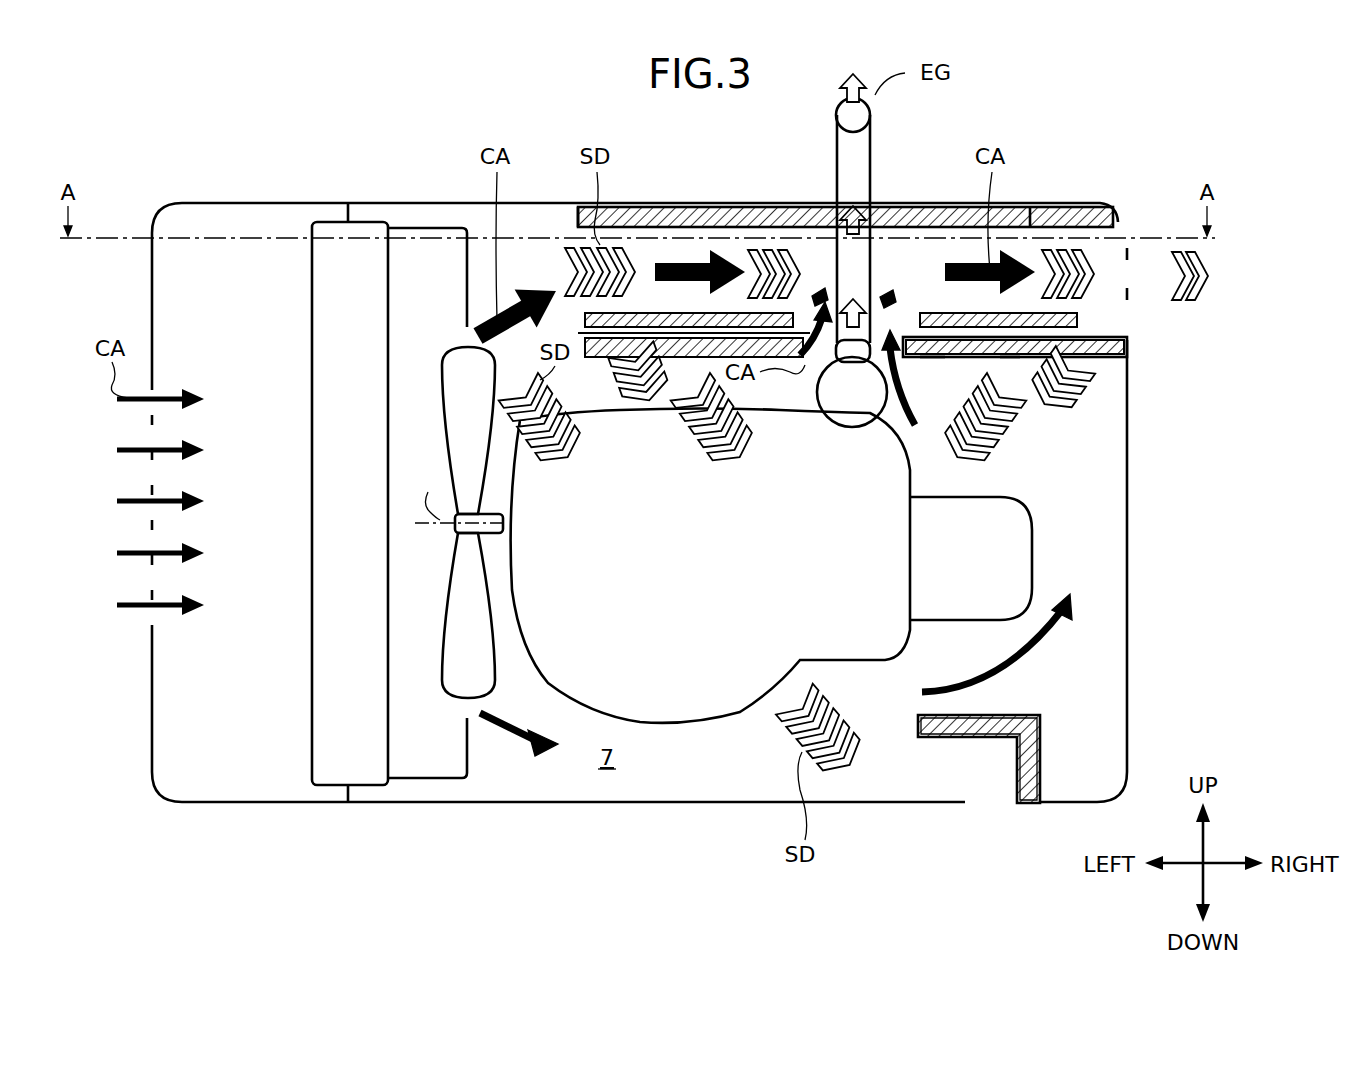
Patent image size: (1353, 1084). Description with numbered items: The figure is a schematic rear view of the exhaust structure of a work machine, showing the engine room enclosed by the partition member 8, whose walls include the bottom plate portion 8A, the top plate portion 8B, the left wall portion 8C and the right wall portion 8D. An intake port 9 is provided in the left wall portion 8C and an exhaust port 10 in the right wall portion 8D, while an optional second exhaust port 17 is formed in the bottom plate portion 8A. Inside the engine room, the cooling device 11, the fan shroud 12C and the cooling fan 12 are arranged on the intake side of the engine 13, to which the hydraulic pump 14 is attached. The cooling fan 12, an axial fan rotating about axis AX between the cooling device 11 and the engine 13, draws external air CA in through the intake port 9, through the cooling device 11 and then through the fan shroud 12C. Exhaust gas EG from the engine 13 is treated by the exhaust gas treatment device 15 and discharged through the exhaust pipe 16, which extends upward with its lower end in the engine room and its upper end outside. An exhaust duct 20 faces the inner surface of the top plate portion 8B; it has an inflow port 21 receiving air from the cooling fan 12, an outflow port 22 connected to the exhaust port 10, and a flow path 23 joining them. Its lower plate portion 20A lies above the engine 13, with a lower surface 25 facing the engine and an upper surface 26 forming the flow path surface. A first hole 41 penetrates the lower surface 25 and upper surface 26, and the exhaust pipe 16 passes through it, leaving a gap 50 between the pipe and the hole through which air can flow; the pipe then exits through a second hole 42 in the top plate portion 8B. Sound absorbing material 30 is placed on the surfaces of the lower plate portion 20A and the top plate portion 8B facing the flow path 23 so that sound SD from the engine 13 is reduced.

The partition member 8 is at (1133, 724).
The bottom plate portion 8A is at (210, 803).
The top plate portion 8B is at (442, 203).
The left wall portion 8C is at (152, 724).
The right wall portion 8D is at (1128, 655).
The intake port 9 is at (115, 428).
The exhaust port 10 is at (1150, 297).
The cooling device 11 is at (322, 738).
The cooling fan 12 is at (462, 688).
The fan shroud 12C is at (428, 785).
The engine 13 is at (660, 700).
The hydraulic pump 14 is at (1000, 558).
The exhaust gas treatment device 15 is at (900, 412).
The exhaust pipe 16 is at (878, 136).
The second exhaust port 17 is at (1003, 800).
The exhaust duct 20 is at (1095, 355).
The lower plate portion 20A is at (1010, 358).
The inflow port 21 is at (570, 232).
The outflow port 22 is at (1118, 230).
The flow path 23 is at (1034, 250).
The lower surface 25 is at (930, 357).
The upper surface 26 is at (940, 320).
The sound absorbing material 30 is at (648, 355).
The first hole 41 is at (812, 340).
The second hole 42 is at (836, 210).
The gap 50 is at (880, 365).